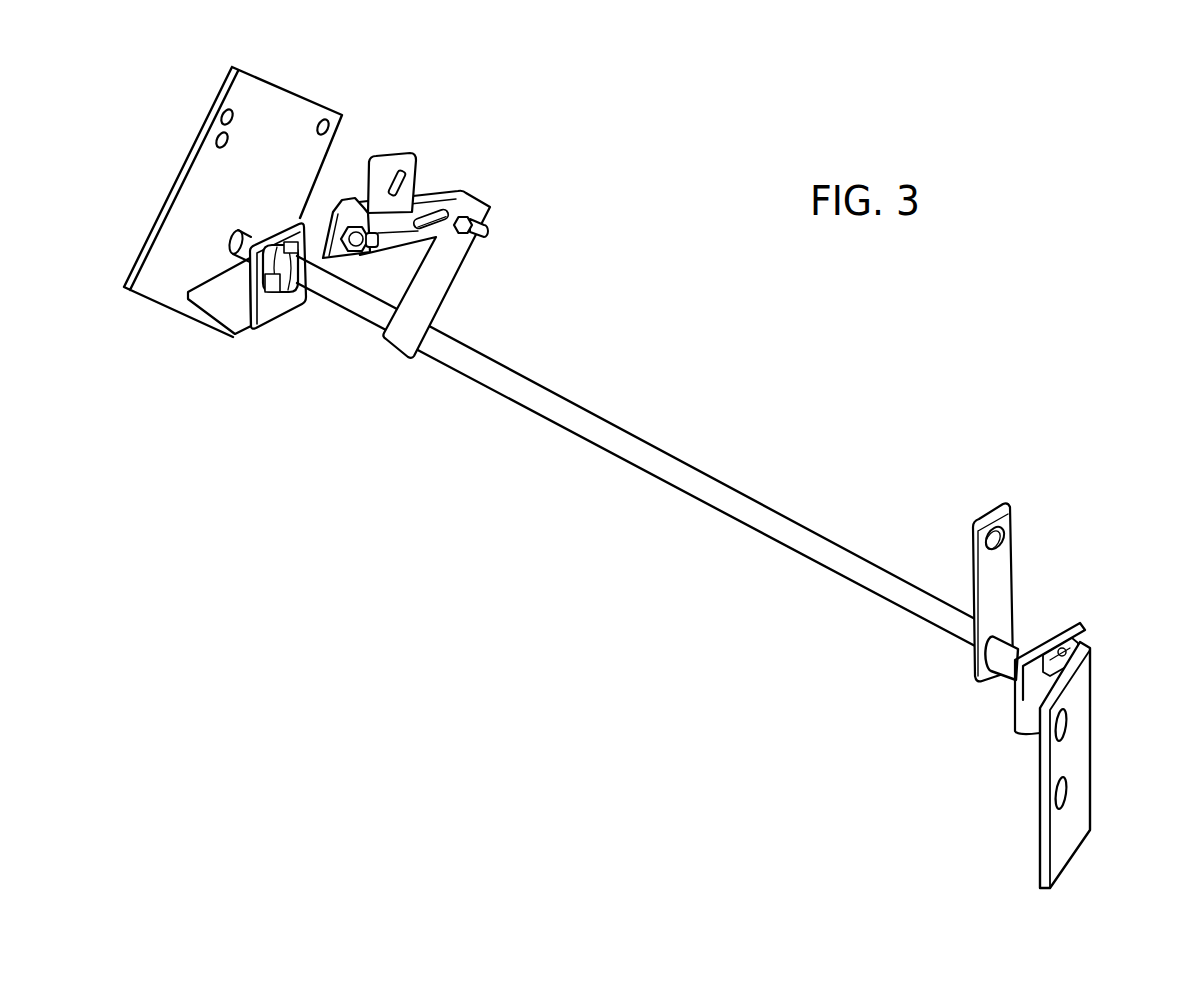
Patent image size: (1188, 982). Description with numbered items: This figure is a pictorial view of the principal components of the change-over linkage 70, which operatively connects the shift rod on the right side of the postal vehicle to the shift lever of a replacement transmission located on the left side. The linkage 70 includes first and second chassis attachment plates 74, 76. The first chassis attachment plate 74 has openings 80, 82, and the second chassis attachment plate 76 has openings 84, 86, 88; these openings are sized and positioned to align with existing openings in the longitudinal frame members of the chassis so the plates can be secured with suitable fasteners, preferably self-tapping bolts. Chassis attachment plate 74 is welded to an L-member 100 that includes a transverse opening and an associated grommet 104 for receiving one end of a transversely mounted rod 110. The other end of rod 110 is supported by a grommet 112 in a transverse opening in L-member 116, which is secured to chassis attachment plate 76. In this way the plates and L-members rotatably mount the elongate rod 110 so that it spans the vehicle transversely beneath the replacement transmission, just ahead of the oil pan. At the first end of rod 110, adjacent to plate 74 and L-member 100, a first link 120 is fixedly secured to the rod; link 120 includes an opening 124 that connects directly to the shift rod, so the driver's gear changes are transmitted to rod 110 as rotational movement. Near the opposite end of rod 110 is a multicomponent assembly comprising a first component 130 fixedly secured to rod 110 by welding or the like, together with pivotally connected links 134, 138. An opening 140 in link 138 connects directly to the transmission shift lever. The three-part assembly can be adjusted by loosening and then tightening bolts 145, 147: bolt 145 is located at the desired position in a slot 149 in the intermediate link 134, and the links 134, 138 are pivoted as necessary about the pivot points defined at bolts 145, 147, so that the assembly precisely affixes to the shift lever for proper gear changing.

The change-over linkage 70 is at (750, 332).
The first chassis attachment plate 74 is at (1070, 828).
The second chassis attachment plate 76 is at (162, 283).
The opening 80 is at (1067, 727).
The opening 82 is at (1067, 793).
The opening 84 is at (329, 115).
The opening 86 is at (225, 104).
The opening 88 is at (216, 137).
The L-member 100 is at (1033, 690).
The grommet 104 is at (1043, 660).
The rod 110 is at (683, 480).
The grommet 112 is at (279, 292).
The L-member 116 is at (230, 292).
The first link 120 is at (990, 577).
The opening 124 is at (1005, 533).
The first component 130 is at (422, 300).
The intermediate link 134 is at (428, 195).
The link 138 is at (337, 207).
The opening 140 is at (414, 158).
The bolt 145 is at (487, 233).
The bolt 147 is at (376, 252).
The slot 149 is at (470, 210).